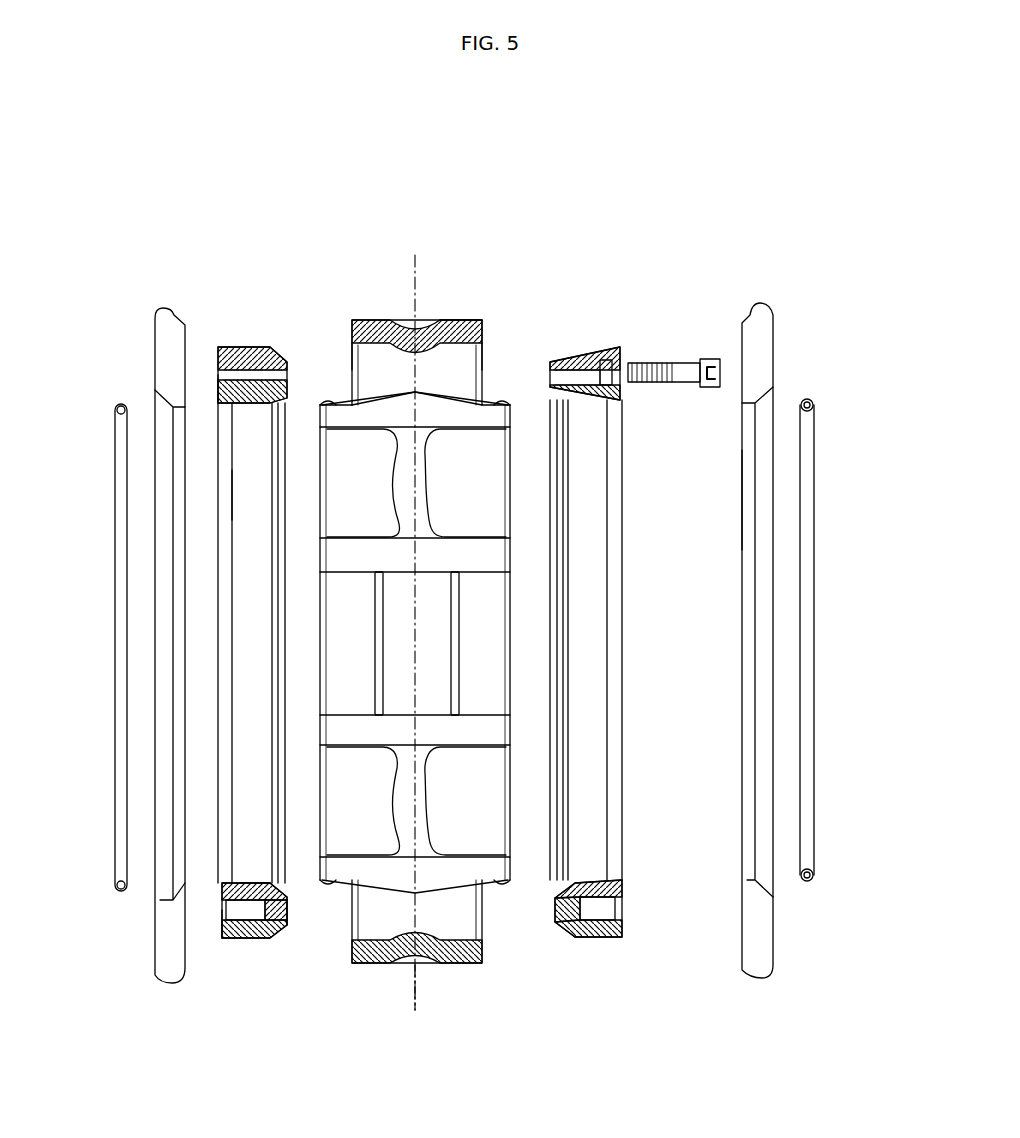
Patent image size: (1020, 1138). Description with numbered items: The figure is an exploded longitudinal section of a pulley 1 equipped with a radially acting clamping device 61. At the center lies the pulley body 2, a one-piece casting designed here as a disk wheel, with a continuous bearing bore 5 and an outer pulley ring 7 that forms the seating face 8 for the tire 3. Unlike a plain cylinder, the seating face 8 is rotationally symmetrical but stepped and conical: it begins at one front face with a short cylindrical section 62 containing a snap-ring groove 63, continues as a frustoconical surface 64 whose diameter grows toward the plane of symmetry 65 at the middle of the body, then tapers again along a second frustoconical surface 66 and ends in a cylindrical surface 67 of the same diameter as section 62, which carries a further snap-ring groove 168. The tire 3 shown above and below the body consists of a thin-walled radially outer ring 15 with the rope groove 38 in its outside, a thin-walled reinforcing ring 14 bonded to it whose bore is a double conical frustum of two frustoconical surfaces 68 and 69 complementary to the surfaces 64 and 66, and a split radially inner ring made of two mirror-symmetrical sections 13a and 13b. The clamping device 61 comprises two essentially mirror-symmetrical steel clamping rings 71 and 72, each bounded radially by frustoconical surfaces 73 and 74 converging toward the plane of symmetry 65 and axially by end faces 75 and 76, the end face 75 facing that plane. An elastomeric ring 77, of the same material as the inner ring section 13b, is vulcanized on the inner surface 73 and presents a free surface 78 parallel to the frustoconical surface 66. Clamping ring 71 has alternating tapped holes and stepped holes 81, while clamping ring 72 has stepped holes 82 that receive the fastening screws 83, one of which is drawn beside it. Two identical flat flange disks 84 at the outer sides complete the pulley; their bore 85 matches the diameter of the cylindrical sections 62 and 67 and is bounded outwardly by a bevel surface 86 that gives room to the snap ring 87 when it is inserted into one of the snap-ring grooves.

The pulley 1 is at (553, 200).
The pulley body 2 is at (333, 940).
The tire 3 is at (382, 278).
The bearing bore 5 is at (482, 573).
The pulley ring 7 is at (370, 867).
The seating face 8 is at (462, 905).
The radially inner ring section 13a is at (597, 343).
The radially inner ring section 13b is at (242, 345).
The reinforcing ring 14 is at (467, 357).
The radially outer ring 15 is at (453, 320).
The rope groove 38 is at (422, 332).
The clamping device 61 is at (670, 248).
The cylindrical section 62 is at (482, 405).
The snap-ring groove 63 is at (487, 433).
The frustoconical surface 64 is at (462, 403).
The plane of symmetry 65 is at (418, 972).
The second frustoconical surface 66 is at (369, 407).
The cylindrical surface 67 is at (323, 402).
The frustoconical surface 68 is at (363, 358).
The frustoconical surface 69 is at (477, 352).
The clamping ring 71 is at (233, 937).
The clamping ring 72 is at (622, 933).
The frustoconical surface 73 is at (253, 883).
The frustoconical surface 74 is at (262, 350).
The end face 75 is at (290, 922).
The end face 76 is at (217, 920).
The elastomeric ring 77 is at (220, 397).
The free surface 78 is at (263, 499).
The stepped hole 81 is at (237, 908).
The stepped hole 82 is at (573, 367).
The fastening screw 83 is at (653, 363).
The flange disk 84 is at (163, 327).
The bore 85 is at (177, 417).
The bevel surface 86 is at (121, 647).
The snap ring 87 is at (803, 565).
The snap-ring groove 168 is at (340, 429).